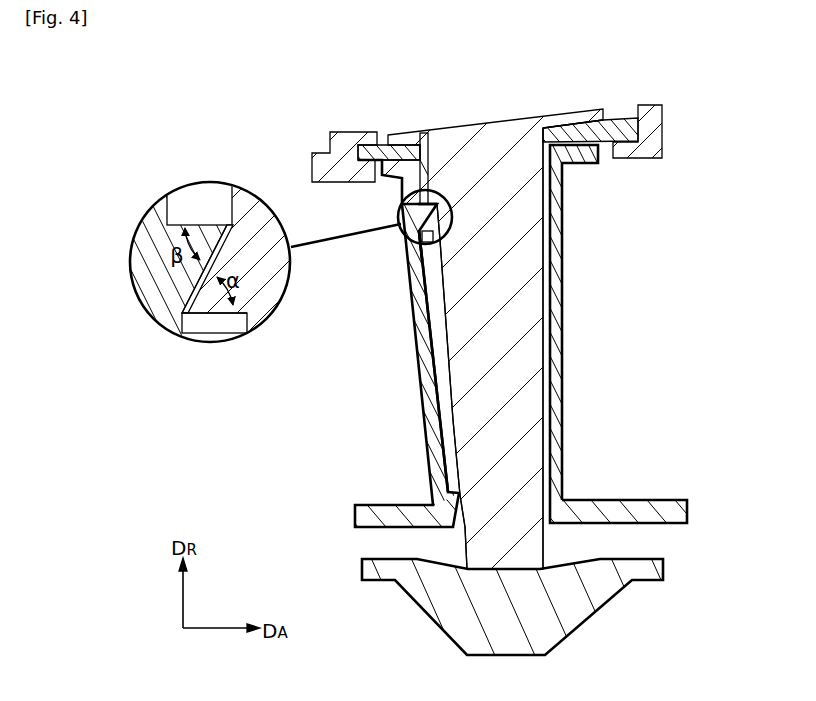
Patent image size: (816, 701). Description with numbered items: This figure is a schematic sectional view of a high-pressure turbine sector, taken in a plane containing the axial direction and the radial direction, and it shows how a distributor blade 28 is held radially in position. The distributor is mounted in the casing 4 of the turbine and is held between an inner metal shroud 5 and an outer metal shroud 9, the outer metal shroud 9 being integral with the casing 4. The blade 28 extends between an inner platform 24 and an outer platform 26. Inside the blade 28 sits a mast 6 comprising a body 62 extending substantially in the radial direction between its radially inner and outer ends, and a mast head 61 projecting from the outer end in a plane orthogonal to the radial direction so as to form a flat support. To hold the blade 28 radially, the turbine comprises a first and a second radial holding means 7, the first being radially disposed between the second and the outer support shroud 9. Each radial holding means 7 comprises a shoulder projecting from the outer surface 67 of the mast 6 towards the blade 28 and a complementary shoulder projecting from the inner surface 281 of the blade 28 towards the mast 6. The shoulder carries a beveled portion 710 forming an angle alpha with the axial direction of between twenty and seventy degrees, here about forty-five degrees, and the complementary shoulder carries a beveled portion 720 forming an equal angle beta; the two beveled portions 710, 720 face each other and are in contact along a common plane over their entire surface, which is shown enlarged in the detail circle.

The casing 4 is at (655, 125).
The inner metal shroud 5 is at (588, 600).
The mast 6 is at (520, 340).
The radial holding means 7 is at (422, 178).
The outer metal shroud 9 is at (617, 128).
The inner platform 24 is at (690, 512).
The outer platform 26 is at (572, 158).
The blade 28 is at (563, 392).
The mast head 61 is at (567, 127).
The body 62 is at (552, 237).
The outer surface 67 is at (447, 372).
The inner surface 281 is at (433, 318).
The beveled portion 710 is at (227, 318).
The beveled portion 720 is at (188, 297).